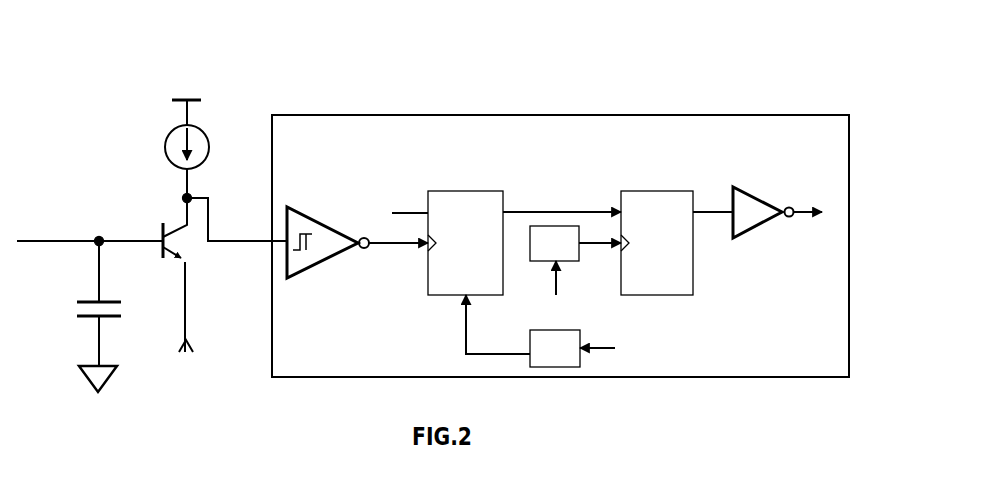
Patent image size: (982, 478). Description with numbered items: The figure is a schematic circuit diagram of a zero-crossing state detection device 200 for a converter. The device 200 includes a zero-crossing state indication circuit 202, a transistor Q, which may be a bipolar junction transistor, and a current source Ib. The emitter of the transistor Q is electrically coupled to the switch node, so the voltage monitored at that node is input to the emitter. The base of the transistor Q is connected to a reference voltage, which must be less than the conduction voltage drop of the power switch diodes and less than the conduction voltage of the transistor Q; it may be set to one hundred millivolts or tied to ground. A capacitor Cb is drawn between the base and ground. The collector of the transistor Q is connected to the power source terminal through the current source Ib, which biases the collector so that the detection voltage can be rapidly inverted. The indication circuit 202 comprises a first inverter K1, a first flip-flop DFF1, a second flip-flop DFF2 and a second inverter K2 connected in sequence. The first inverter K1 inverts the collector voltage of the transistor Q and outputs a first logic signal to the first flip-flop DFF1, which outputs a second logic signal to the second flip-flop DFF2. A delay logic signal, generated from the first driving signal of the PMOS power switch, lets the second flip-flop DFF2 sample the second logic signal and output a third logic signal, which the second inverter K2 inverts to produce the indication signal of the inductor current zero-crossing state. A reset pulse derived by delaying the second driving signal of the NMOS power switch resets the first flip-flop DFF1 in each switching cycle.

The zero-crossing state detection device 200 is at (284, 70).
The zero-crossing state indication circuit 202 is at (536, 169).
The current source Ib is at (196, 147).
The transistor Q is at (163, 275).
The base capacitor Cb is at (104, 303).
The first inverter K1 is at (328, 233).
The first flip-flop DFF1 is at (465, 243).
The second flip-flop DFF2 is at (657, 243).
The second inverter K2 is at (763, 202).